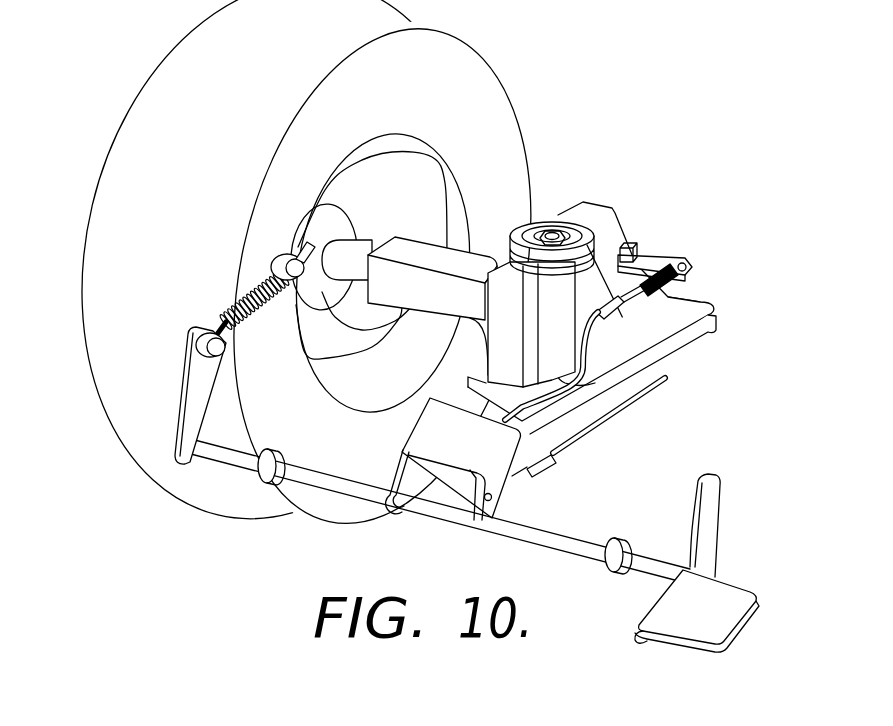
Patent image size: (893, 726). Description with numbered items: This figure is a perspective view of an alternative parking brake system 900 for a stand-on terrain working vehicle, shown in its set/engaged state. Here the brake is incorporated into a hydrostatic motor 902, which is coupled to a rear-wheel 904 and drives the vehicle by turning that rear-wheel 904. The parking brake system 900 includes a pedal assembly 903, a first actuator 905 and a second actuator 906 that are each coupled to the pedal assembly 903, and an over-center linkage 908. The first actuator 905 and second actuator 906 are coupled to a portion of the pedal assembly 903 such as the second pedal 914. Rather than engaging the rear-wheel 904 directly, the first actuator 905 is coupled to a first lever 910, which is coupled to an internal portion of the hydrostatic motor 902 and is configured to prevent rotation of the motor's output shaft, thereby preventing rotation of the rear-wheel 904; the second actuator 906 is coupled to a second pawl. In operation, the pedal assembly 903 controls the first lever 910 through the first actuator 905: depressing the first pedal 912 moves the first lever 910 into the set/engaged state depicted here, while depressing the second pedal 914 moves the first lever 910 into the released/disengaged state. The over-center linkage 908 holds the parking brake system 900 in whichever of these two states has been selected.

The parking brake system 900 is at (692, 93).
The hydrostatic motor 902 is at (660, 379).
The pedal assembly 903 is at (552, 538).
The rear-wheel 904 is at (137, 121).
The first actuator 905 is at (592, 333).
The second actuator 906 is at (585, 442).
The over-center linkage 908 is at (158, 355).
The first lever 910 is at (655, 258).
The first pedal 912 is at (740, 590).
The second pedal 914 is at (423, 432).